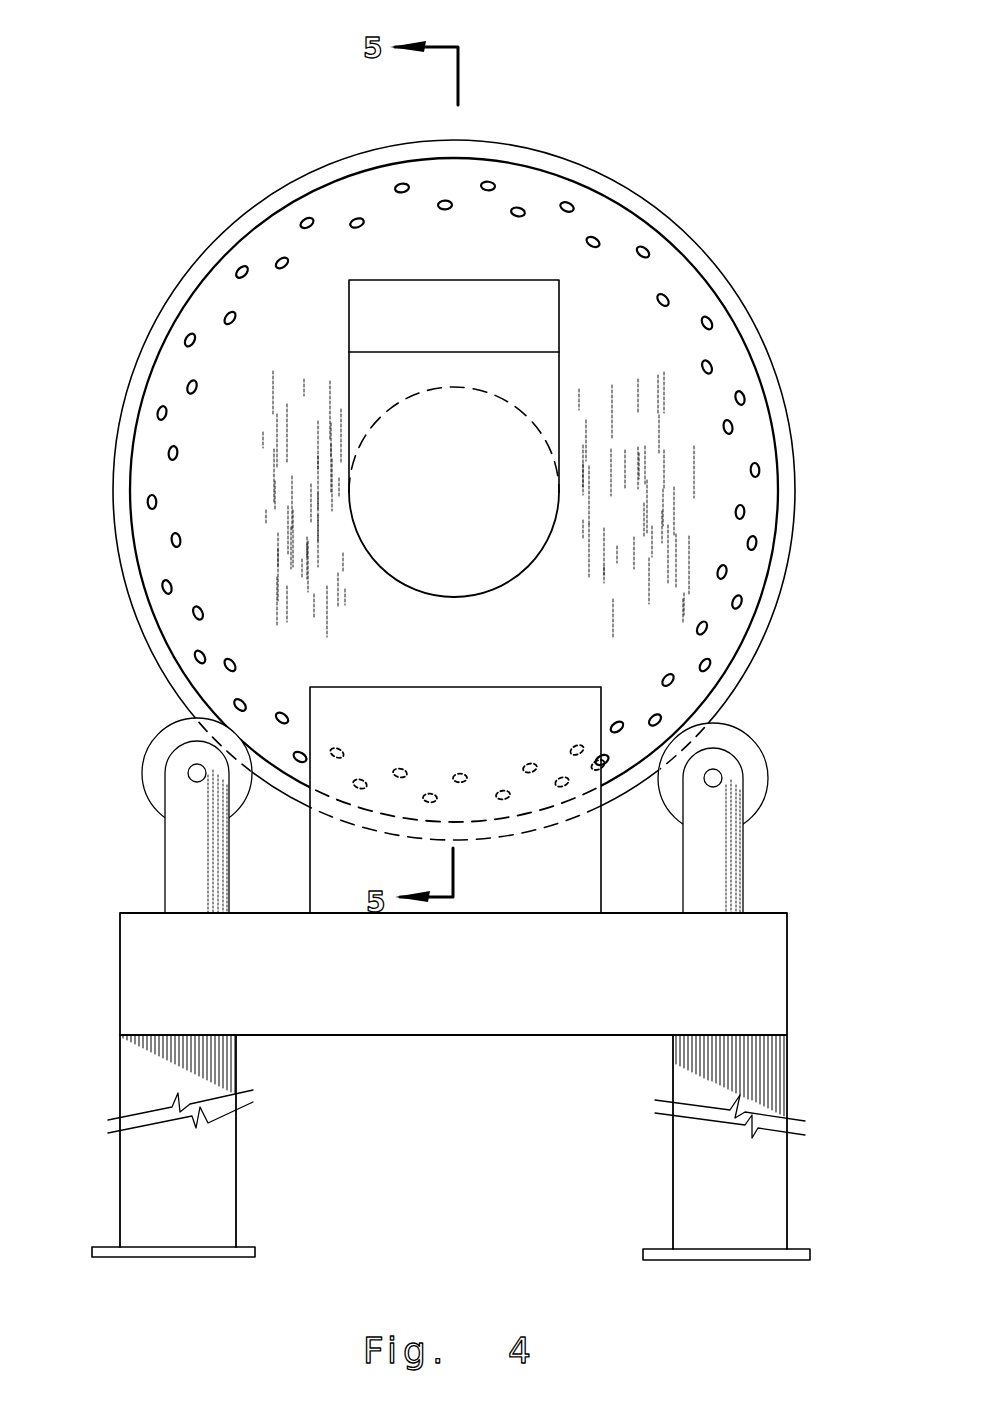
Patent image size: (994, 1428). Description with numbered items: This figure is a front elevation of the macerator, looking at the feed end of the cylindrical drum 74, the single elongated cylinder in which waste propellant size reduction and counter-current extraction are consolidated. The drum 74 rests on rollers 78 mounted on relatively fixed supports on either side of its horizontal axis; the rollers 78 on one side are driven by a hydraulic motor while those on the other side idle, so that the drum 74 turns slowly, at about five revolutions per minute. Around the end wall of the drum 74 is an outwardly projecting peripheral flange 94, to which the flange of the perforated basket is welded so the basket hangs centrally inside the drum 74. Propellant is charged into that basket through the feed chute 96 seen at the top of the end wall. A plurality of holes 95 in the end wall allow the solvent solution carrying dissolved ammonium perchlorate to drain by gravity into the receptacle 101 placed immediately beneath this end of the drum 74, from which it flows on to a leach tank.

The cylindrical drum 74 is at (687, 233).
The outwardly projecting peripheral flange 94 is at (737, 674).
The holes 95 is at (180, 537).
The feed chute 96 is at (559, 394).
The receptacle 101 is at (515, 706).
The rollers 78 is at (152, 758).